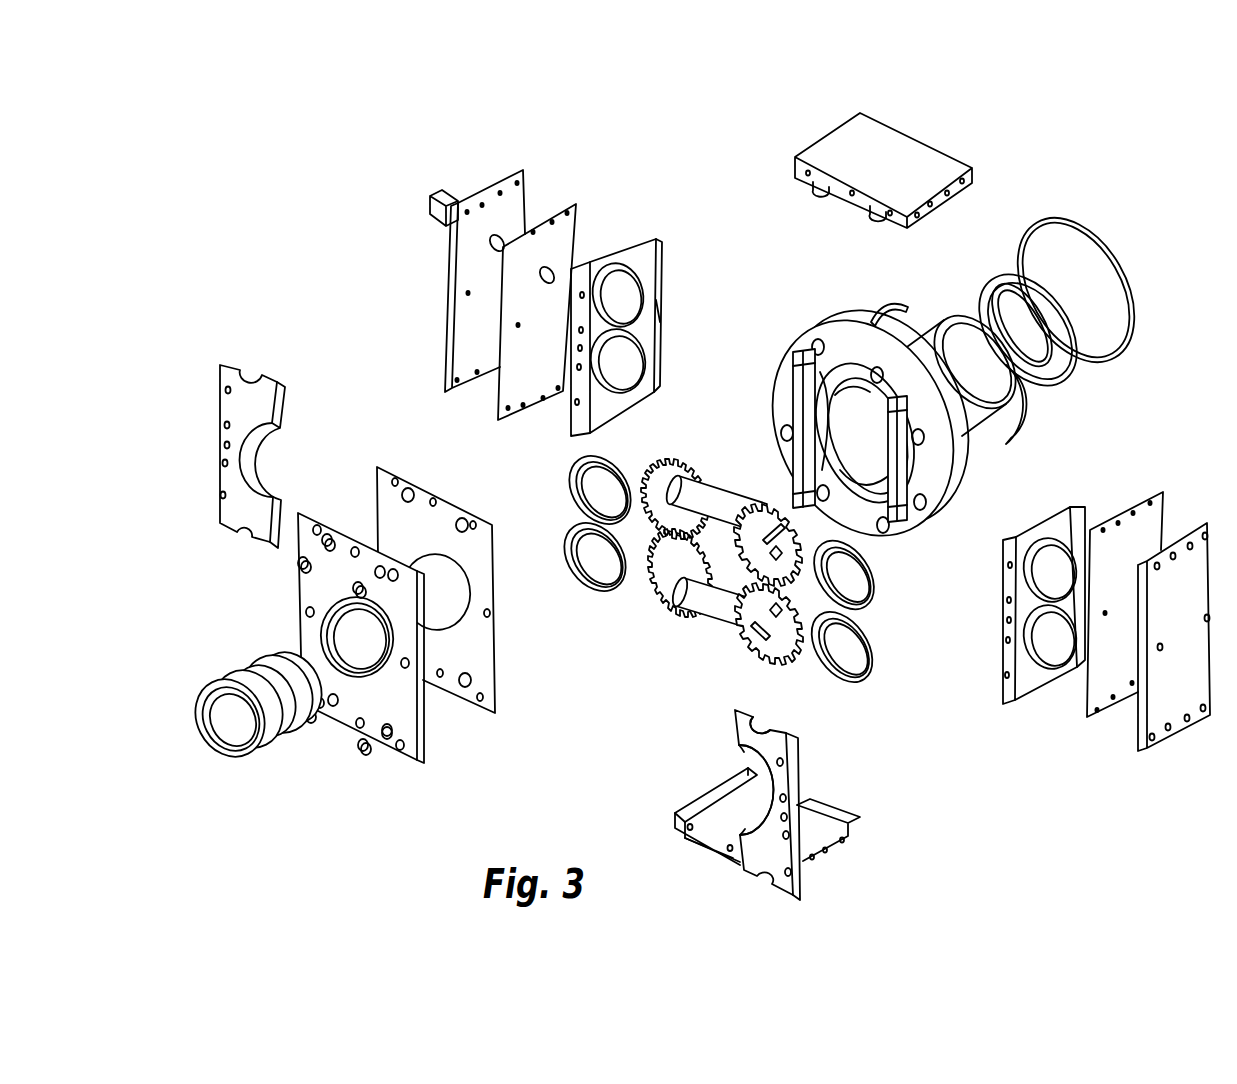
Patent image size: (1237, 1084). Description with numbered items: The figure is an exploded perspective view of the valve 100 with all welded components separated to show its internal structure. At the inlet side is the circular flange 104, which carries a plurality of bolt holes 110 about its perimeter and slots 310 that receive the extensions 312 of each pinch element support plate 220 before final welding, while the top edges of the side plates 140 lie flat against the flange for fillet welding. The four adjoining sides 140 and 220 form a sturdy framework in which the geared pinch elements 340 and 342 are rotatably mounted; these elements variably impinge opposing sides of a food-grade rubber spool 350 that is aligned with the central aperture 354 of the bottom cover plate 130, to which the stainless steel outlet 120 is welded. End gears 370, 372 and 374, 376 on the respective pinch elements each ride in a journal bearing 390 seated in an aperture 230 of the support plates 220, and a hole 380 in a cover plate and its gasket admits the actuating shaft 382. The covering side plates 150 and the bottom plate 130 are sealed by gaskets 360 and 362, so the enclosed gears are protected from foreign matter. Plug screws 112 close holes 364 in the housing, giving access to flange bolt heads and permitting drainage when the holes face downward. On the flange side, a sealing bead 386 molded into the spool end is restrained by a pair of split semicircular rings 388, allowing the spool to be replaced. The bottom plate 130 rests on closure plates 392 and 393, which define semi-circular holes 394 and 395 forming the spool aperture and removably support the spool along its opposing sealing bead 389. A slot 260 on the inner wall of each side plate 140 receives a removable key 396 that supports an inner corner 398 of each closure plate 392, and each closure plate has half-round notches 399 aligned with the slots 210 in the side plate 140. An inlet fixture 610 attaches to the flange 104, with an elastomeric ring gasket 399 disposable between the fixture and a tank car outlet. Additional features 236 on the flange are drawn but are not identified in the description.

The valve 100 is at (1027, 138).
The circular flange 104 is at (860, 327).
The bolt holes 110 is at (917, 433).
The plug screws 112 is at (298, 568).
The valve outlet 120 is at (267, 757).
The bottom cover plate 130 is at (413, 717).
The framework side plate 140 is at (895, 133).
The covering side plates 150 is at (463, 328).
The slots 210 is at (877, 213).
The pinch element support plate 220 is at (628, 245).
The aperture 230 is at (634, 288).
The flange tabs 236 is at (833, 367).
The slot 260 is at (735, 825).
The slots 310 is at (850, 428).
The extensions 312 is at (655, 322).
The geared pinch element 340 is at (723, 480).
The geared pinch element 342 is at (697, 630).
The spool 350 is at (927, 333).
The central aperture 354 is at (343, 633).
The gasket 360 is at (503, 390).
The gasket 362 is at (378, 470).
The holes 364 is at (380, 567).
The end gear 370 is at (653, 533).
The end gear 372 is at (755, 510).
The end gear 374 is at (655, 607).
The end gear 376 is at (745, 665).
The hole 380 is at (548, 268).
The shaft 382 is at (437, 222).
The sealing bead 386 is at (1003, 355).
The semicircular rings 388 is at (890, 298).
The opposing spool sealing bead 389 is at (820, 397).
The journal bearing 390 is at (588, 568).
The closure plate 392 is at (778, 773).
The closure plate 393 is at (223, 505).
The semi-circular hole 394 is at (727, 777).
The semi-circular hole 395 is at (268, 448).
The removable key 396 is at (737, 748).
The inner corner 398 is at (740, 748).
The half-round notches 399 is at (1085, 230).
The inlet fixture 610 is at (1073, 373).